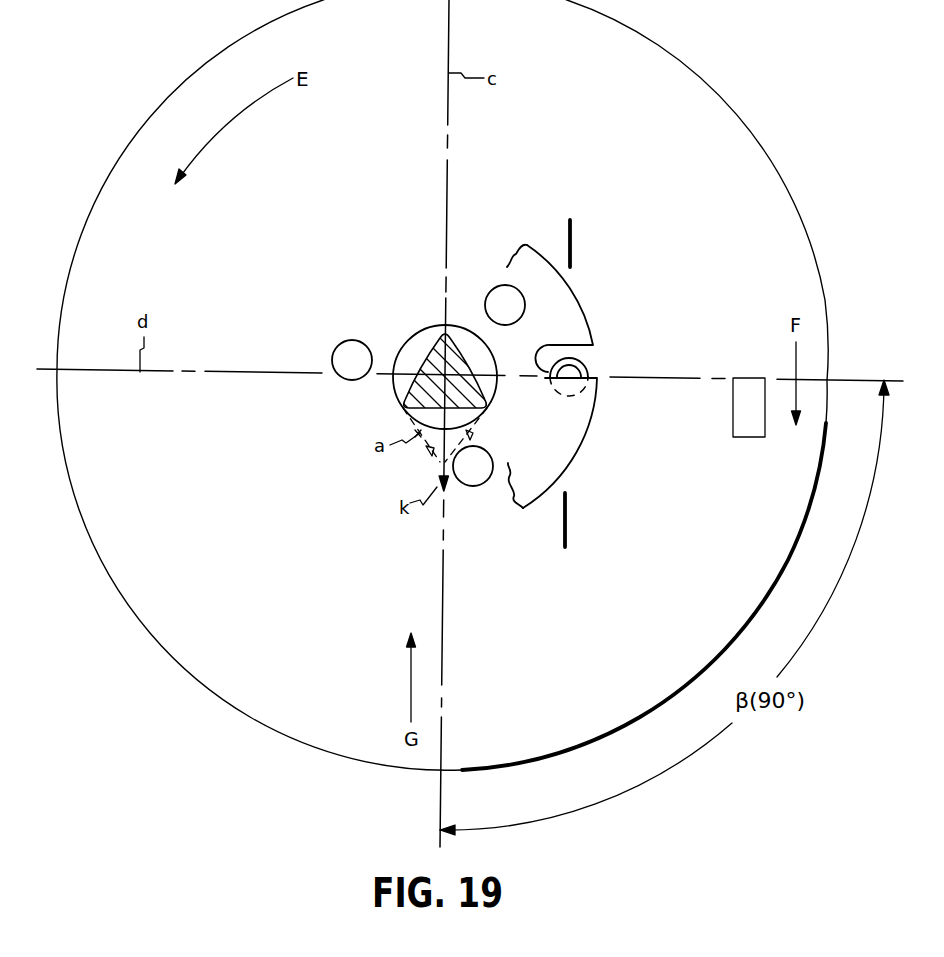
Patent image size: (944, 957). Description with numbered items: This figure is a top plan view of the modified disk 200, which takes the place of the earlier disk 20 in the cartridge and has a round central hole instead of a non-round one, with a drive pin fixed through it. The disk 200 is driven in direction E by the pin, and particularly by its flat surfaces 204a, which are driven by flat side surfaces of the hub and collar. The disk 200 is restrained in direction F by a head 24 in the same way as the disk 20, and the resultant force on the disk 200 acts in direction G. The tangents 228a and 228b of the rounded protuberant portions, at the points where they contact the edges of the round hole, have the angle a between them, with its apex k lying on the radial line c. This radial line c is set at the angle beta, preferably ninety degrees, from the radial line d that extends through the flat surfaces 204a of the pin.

The modified disk 200 is at (276, 620).
The disk 20 is at (578, 243).
The flat surfaces 204a is at (590, 365).
The tangent 228a is at (428, 452).
The tangent 228b is at (470, 437).
The head 24 is at (752, 438).